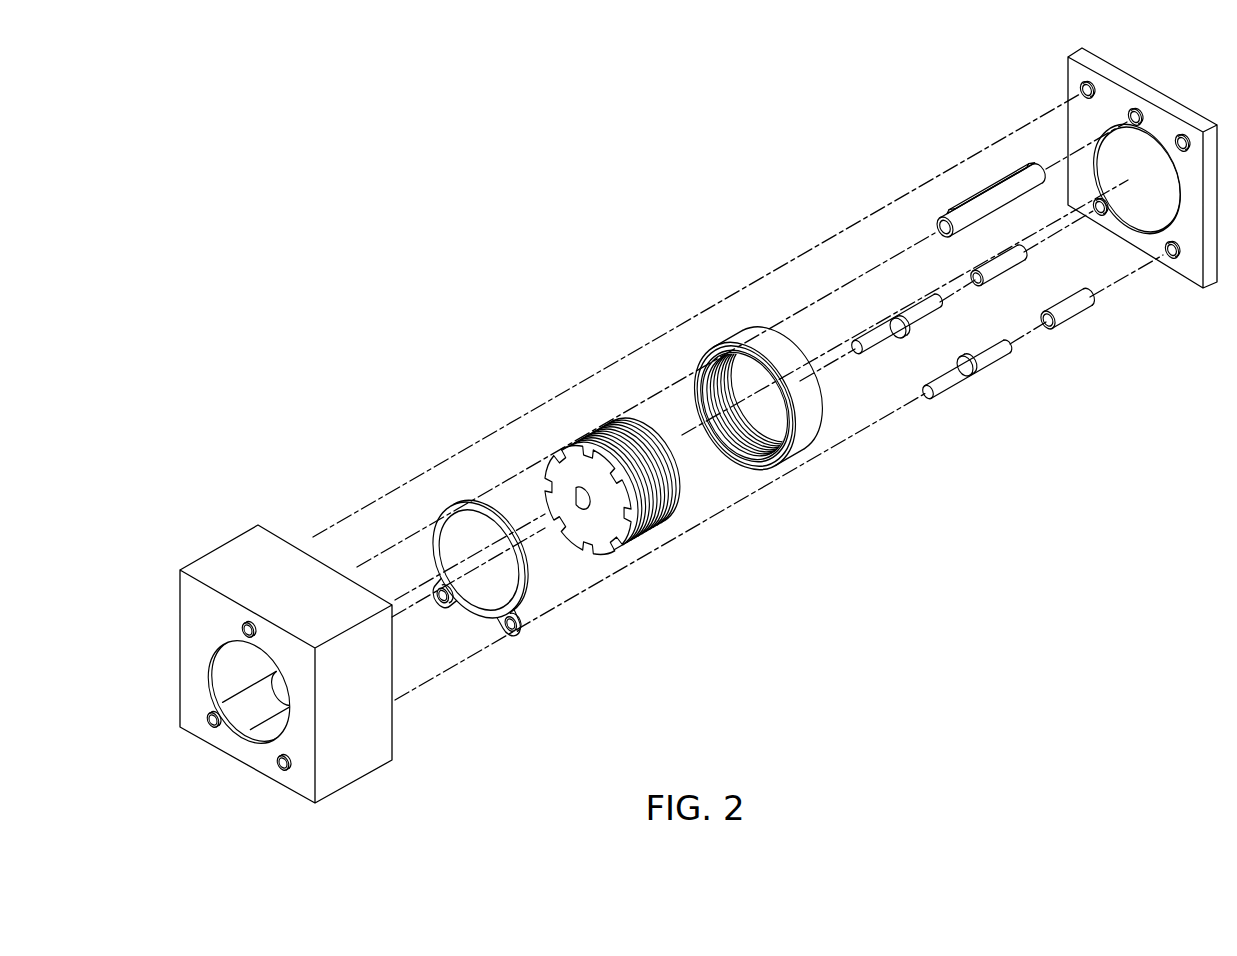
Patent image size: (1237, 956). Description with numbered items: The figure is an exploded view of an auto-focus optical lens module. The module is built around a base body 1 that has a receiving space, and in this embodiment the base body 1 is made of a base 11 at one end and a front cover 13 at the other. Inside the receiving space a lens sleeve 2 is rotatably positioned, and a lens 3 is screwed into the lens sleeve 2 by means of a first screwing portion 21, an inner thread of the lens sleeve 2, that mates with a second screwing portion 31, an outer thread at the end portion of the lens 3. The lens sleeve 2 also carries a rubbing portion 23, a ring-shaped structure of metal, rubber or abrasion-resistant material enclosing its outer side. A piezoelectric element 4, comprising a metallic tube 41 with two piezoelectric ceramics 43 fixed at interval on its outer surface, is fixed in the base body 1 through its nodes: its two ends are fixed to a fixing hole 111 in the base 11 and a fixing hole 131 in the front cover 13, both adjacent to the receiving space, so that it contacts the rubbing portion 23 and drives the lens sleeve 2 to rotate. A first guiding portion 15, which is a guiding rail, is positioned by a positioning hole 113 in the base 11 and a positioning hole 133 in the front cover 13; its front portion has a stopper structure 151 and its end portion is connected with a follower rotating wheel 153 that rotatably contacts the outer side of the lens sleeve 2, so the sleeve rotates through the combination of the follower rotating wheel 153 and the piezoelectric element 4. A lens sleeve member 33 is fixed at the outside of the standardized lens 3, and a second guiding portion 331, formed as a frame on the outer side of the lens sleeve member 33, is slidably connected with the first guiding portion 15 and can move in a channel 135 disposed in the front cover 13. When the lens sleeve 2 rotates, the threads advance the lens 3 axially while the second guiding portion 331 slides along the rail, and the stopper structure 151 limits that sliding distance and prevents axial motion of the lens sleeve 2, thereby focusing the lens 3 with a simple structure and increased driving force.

The base body 1 is at (533, 186).
The base 11 is at (914, 199).
The fixing hole 111 is at (1140, 113).
The positioning hole 113 is at (1105, 218).
The front cover 13 is at (354, 503).
The fixing hole 131 is at (247, 624).
The positioning hole 133 is at (210, 728).
The channel 135 is at (250, 714).
The first guiding portion 15 is at (984, 396).
The stopper structure 151 is at (973, 372).
The follower rotating wheel 153 is at (1070, 310).
The lens sleeve 2 is at (804, 432).
The first screwing portion 21 is at (752, 447).
The rubbing portion 23 is at (790, 453).
The lens 3 is at (653, 522).
The second screwing portion 31 is at (664, 503).
The lens sleeve member 33 is at (479, 610).
The second guiding portion 331 is at (513, 640).
The piezoelectric element 4 is at (953, 169).
The metallic tube 41 is at (937, 222).
The piezoelectric ceramics 43 is at (1007, 173).